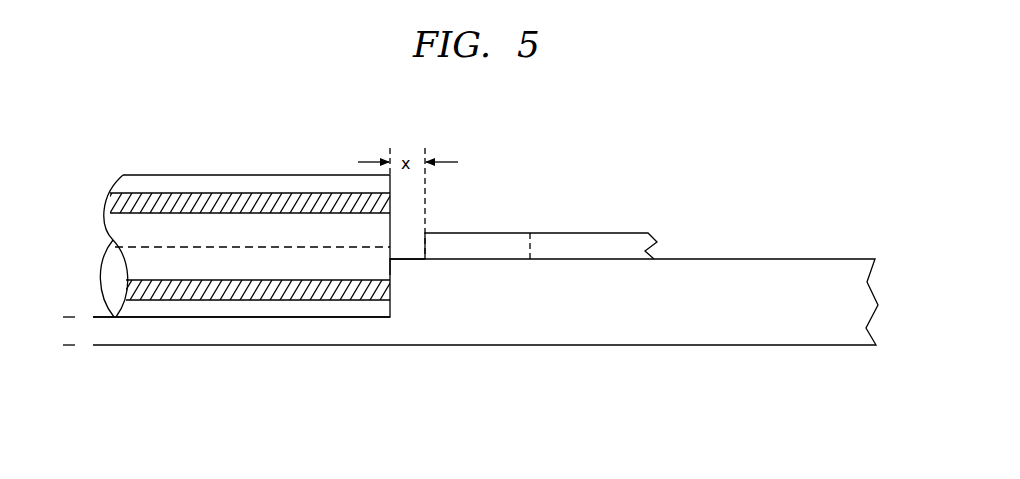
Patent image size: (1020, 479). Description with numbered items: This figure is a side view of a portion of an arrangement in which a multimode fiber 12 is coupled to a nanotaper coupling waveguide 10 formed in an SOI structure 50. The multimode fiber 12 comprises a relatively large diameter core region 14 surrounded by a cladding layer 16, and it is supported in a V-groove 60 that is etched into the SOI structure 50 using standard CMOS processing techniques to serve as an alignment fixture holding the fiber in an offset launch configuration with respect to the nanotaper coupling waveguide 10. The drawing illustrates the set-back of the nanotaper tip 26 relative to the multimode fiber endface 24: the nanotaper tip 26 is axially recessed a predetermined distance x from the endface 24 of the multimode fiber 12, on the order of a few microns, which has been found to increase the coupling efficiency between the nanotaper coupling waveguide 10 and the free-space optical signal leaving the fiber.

The nanotaper coupling waveguide 10 is at (490, 262).
The multimode fiber 12 is at (175, 175).
The core region 14 is at (140, 258).
The cladding layer 16 is at (243, 205).
The multimode fiber endface 24 is at (389, 270).
The nanotaper tip 26 is at (425, 250).
The SOI structure 50 is at (782, 277).
The V-groove 60 is at (197, 310).